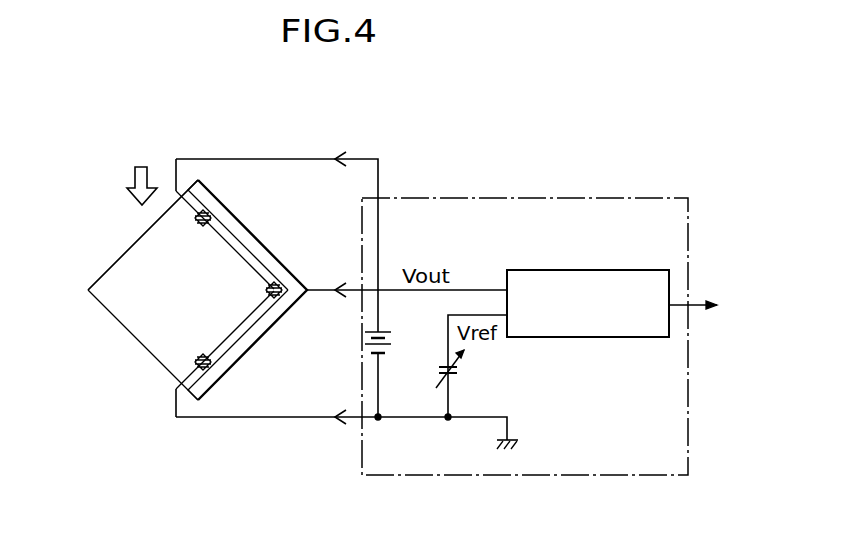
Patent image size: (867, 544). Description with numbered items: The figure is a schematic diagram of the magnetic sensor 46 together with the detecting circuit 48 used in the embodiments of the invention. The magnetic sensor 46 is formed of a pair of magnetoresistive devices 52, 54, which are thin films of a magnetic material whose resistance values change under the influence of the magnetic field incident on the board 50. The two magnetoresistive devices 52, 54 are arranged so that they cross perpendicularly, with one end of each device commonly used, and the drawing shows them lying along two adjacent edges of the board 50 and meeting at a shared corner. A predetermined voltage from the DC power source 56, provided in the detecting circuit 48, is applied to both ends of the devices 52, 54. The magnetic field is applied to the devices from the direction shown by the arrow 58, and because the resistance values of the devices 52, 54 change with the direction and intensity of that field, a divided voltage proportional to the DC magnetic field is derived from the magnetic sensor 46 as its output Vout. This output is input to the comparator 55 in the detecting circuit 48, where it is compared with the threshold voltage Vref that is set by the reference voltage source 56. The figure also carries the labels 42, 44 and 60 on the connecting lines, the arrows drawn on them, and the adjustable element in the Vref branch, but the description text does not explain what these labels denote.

The lead wires 42 is at (347, 157).
The current direction arrows 44 is at (337, 156).
The magnetic sensor 46 is at (152, 330).
The detecting circuit 48 is at (545, 196).
The board 50 is at (128, 273).
The magnetoresistive device 52 is at (243, 257).
The magnetoresistive device 54 is at (245, 318).
The comparator 55 is at (538, 268).
The DC power source 56 is at (364, 340).
The arrow 58 is at (132, 178).
The variable resistor 60 is at (465, 370).